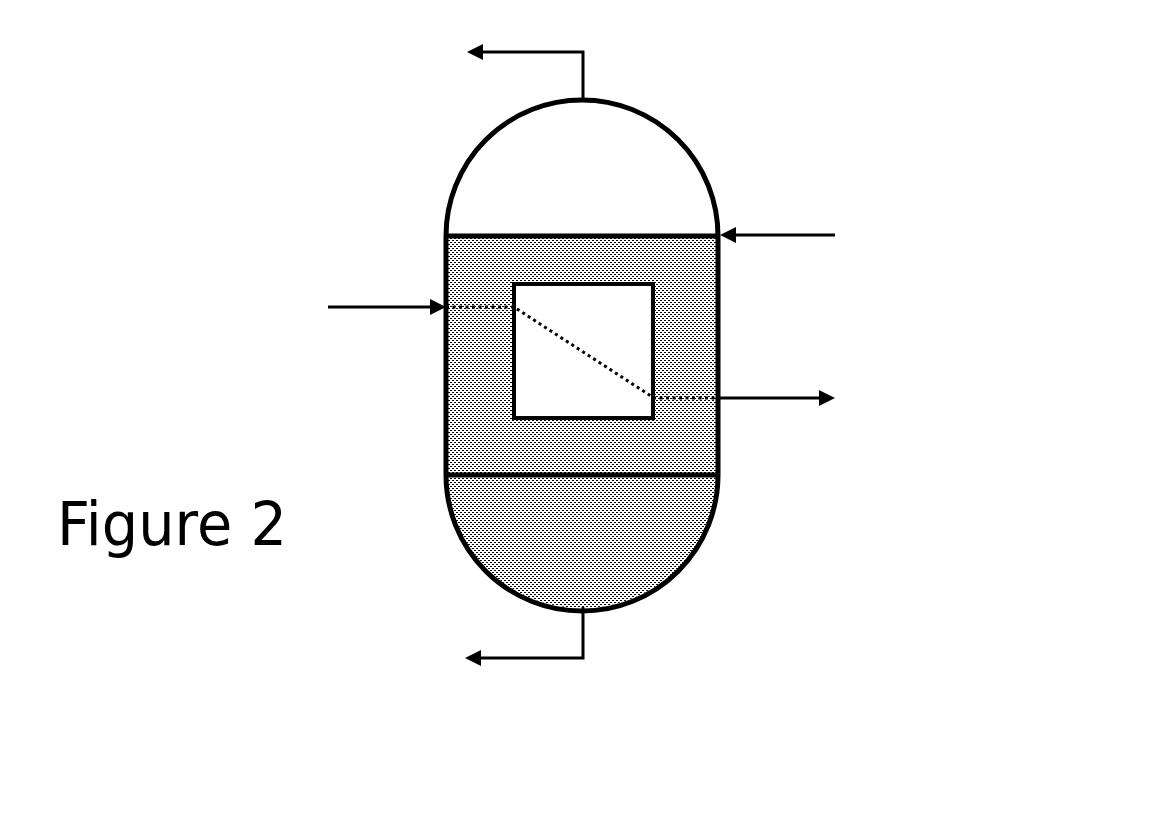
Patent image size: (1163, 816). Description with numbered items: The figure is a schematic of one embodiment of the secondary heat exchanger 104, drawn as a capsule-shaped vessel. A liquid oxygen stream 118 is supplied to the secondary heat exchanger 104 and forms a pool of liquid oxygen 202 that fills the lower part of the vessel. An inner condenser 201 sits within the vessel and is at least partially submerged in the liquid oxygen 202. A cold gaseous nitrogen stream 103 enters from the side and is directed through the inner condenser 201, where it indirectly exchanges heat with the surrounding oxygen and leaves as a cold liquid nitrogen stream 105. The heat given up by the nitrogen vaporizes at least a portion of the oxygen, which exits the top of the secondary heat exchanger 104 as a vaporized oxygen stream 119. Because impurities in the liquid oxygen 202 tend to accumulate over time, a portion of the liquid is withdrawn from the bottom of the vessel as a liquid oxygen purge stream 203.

The cold gaseous nitrogen stream 103 is at (344, 313).
The secondary heat exchanger 104 is at (604, 380).
The cold liquid nitrogen stream 105 is at (806, 400).
The liquid oxygen stream 118 is at (808, 240).
The vaporized oxygen stream 119 is at (484, 70).
The inner condenser 201 is at (667, 332).
The liquid oxygen 202 is at (593, 511).
The liquid oxygen purge stream 203 is at (491, 643).